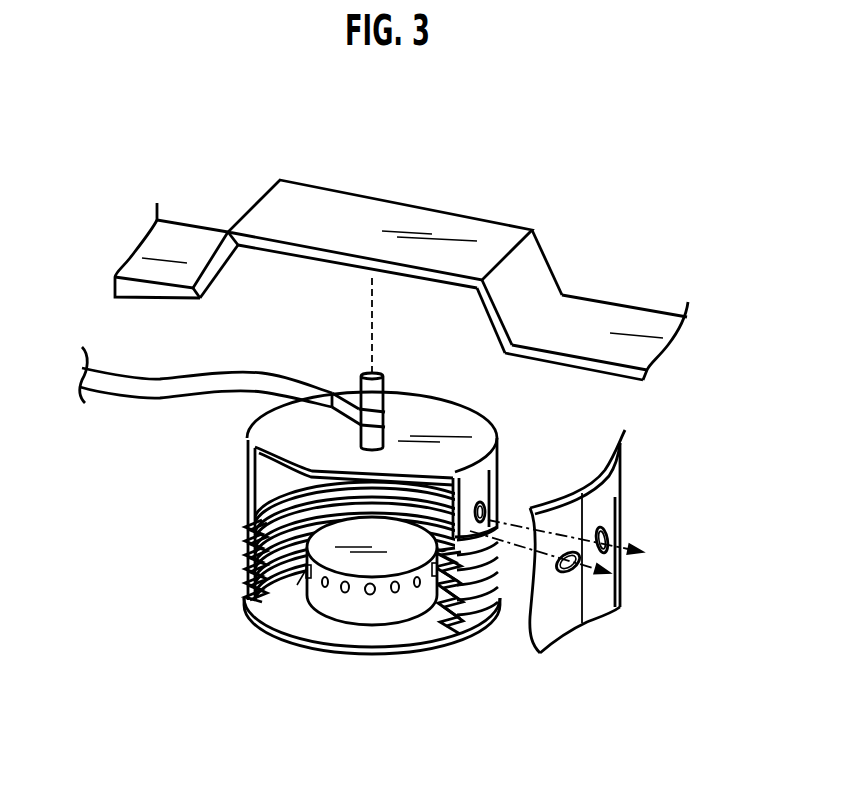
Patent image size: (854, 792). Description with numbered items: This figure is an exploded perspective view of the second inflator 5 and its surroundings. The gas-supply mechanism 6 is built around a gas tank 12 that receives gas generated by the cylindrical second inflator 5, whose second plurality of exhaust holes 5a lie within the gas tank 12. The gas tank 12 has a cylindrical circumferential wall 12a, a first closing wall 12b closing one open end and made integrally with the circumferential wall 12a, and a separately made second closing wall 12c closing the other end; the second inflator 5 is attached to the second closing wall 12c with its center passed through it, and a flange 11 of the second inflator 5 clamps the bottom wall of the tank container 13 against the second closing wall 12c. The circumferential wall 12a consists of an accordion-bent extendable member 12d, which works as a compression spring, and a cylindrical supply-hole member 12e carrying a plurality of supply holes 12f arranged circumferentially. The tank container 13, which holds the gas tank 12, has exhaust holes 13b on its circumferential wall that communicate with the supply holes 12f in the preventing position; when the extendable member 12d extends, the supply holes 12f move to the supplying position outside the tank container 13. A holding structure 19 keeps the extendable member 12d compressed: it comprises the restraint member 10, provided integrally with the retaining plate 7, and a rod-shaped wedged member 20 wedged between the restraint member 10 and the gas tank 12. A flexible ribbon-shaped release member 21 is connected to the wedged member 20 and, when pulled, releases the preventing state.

The second inflator 5 is at (350, 613).
The second plurality of exhaust holes 5a is at (368, 595).
The gas-supply mechanism 6 is at (363, 621).
The retaining plate 7 is at (615, 317).
The restraint member 10 is at (380, 213).
The flange 11 is at (303, 627).
The gas tank 12 is at (369, 529).
The circumferential wall 12a is at (495, 470).
The first closing wall 12b is at (460, 430).
The second closing wall 12c is at (433, 643).
The extendable member 12d is at (247, 538).
The supply-hole member 12e is at (250, 475).
The supply holes 12f is at (470, 484).
The tank container 13 is at (623, 564).
The exhaust holes 13b is at (612, 510).
The holding structure 19 is at (401, 251).
The wedged member 20 is at (363, 433).
The release member 21 is at (130, 388).